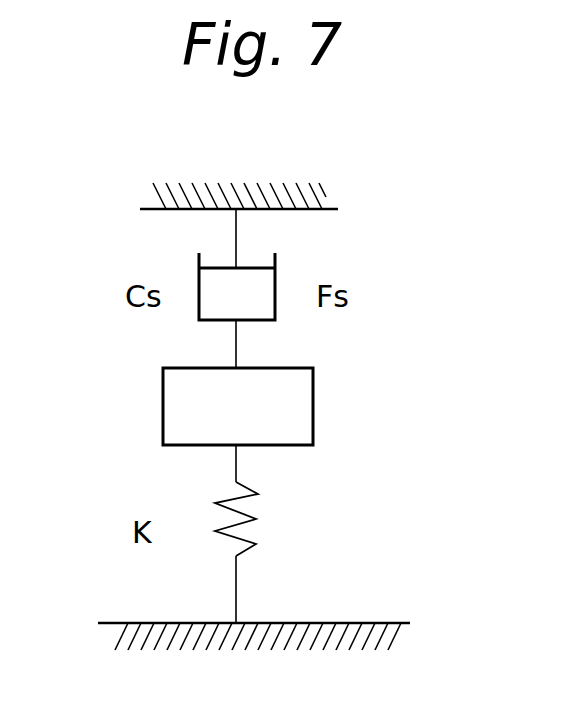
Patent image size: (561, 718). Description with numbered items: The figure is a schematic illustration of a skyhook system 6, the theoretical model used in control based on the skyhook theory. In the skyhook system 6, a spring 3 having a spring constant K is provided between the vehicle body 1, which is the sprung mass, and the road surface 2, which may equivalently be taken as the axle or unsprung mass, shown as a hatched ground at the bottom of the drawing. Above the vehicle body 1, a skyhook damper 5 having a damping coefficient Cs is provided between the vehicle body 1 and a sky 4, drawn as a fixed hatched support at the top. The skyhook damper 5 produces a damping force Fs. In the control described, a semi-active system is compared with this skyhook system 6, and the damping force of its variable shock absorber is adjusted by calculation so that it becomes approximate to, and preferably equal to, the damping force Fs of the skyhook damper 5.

The vehicle body 1 is at (163, 408).
The road surface 2 is at (372, 638).
The spring 3 is at (250, 496).
The sky 4 is at (305, 197).
The skyhook damper 5 is at (197, 281).
The skyhook system 6 is at (393, 358).